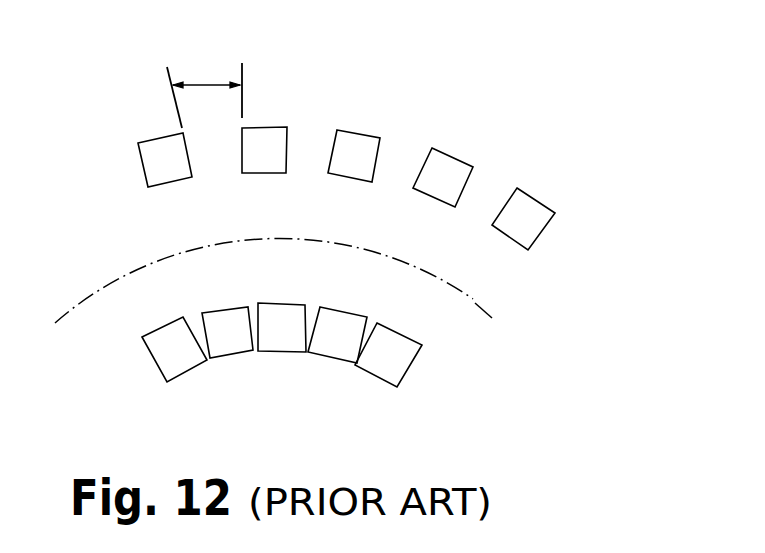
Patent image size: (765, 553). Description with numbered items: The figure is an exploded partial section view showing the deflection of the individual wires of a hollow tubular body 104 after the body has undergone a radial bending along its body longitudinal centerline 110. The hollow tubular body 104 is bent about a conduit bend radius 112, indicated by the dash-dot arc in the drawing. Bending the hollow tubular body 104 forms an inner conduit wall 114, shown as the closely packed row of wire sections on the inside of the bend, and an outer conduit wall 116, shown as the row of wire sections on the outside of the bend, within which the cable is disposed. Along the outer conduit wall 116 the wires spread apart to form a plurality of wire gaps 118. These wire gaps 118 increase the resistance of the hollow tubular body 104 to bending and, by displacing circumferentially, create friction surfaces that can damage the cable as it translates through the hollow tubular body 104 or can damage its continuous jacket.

The hollow tubular body 104 is at (565, 280).
The body longitudinal centerline 110 is at (475, 303).
The conduit bend radius 112 is at (264, 280).
The inner conduit wall 114 is at (408, 338).
The outer conduit wall 116 is at (168, 183).
The wire gaps 118 is at (205, 85).